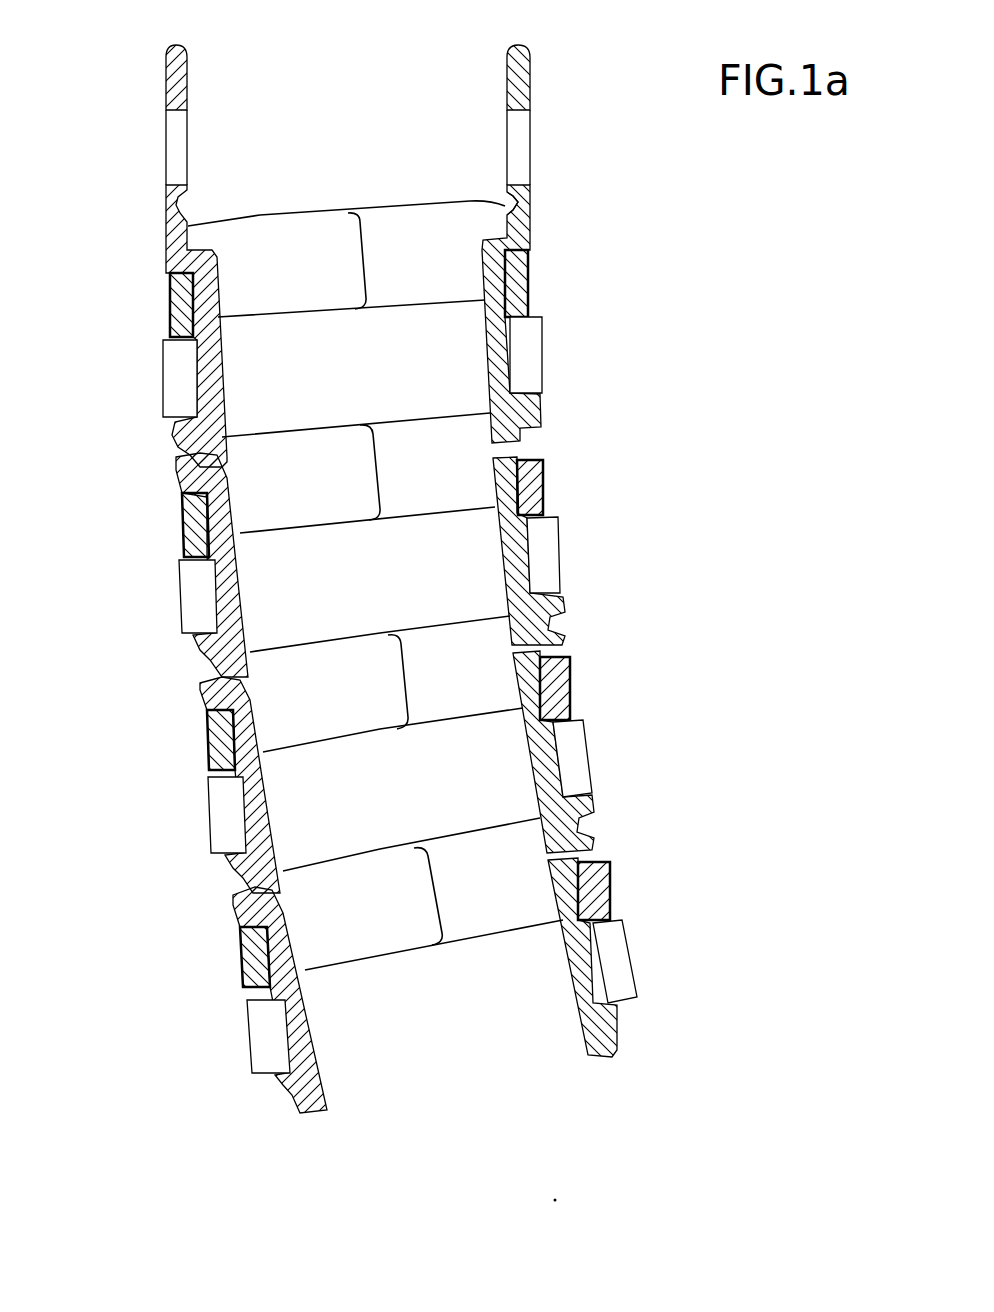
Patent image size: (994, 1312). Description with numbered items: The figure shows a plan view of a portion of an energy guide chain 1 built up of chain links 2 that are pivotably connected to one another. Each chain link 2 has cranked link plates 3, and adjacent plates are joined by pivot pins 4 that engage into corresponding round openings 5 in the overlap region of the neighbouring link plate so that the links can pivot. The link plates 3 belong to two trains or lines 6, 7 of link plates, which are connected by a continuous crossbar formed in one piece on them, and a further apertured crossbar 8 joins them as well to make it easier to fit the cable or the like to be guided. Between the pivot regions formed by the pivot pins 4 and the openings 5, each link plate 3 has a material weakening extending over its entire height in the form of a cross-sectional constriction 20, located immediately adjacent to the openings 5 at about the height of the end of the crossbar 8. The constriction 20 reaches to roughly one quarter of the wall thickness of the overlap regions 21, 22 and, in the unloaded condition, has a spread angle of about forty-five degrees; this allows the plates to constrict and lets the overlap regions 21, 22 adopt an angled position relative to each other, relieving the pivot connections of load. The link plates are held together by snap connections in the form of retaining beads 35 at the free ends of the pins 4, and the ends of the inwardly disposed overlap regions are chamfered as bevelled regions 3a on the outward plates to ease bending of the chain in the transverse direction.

The energy guide chain 1 is at (647, 632).
The chain link 2 is at (580, 647).
The link plate 3 is at (533, 445).
The bevelled region 3a is at (520, 473).
The pivot pin 4 is at (525, 342).
The round opening 5 is at (520, 133).
The train of link plates 6 is at (610, 1078).
The train of link plates 7 is at (320, 1128).
The apertured crossbar 8 is at (470, 222).
The cross-sectional constriction 20 is at (523, 203).
The overlap region 21 is at (546, 284).
The overlap region 22 is at (160, 290).
The retaining bead 35 is at (553, 555).